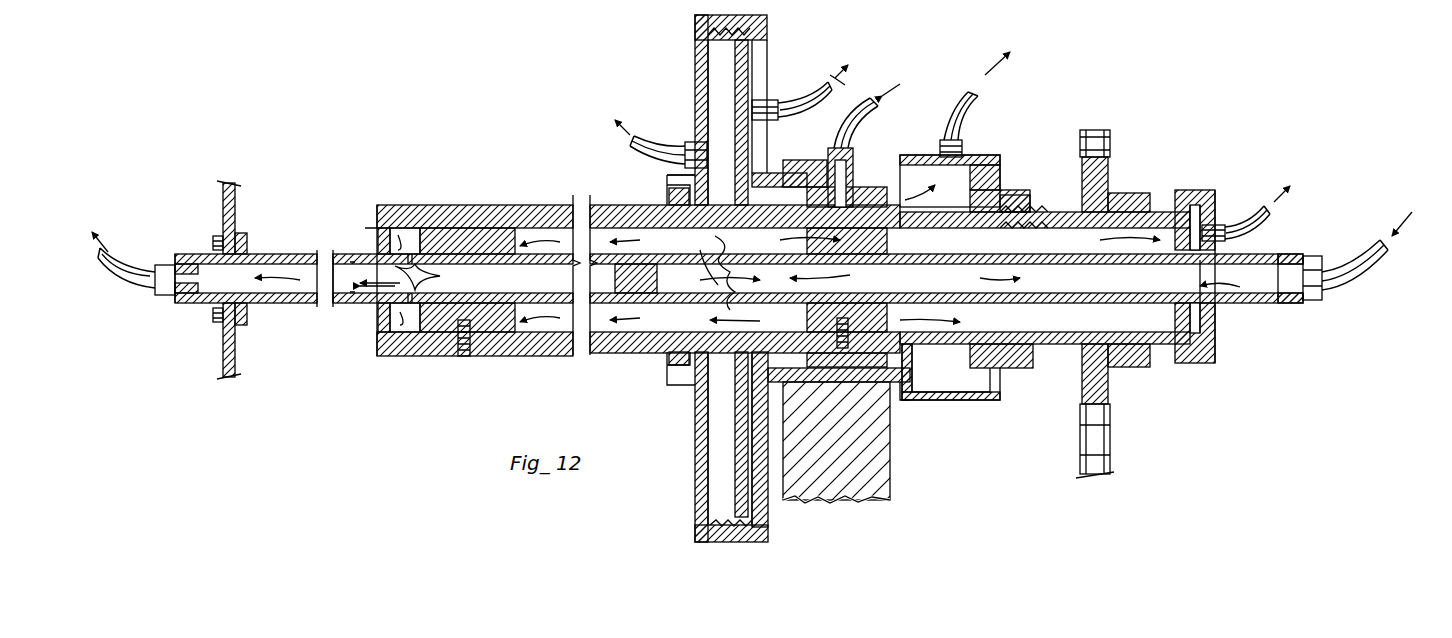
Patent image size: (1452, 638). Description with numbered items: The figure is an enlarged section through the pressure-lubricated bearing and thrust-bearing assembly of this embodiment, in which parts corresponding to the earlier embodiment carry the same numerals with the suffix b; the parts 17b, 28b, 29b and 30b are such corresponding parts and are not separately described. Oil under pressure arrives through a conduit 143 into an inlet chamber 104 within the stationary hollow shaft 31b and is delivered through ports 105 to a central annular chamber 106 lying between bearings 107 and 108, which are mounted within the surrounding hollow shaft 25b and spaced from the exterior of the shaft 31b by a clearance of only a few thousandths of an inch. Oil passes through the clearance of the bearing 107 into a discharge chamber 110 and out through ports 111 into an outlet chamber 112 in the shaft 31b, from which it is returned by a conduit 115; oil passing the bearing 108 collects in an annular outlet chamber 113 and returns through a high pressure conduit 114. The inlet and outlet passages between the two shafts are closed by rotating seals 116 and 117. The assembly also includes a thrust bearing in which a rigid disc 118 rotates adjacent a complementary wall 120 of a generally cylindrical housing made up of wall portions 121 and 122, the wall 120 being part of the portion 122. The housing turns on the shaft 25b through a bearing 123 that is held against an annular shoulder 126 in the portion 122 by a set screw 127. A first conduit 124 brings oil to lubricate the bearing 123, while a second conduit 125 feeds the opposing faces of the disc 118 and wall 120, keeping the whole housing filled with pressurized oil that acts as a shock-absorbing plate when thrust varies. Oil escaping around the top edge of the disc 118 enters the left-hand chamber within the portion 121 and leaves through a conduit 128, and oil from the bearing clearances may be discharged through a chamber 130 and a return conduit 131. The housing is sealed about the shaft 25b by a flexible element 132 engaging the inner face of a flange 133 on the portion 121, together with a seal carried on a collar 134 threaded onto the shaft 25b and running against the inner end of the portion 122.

The conduit 115 is at (118, 245).
The flange plate 30b is at (235, 200).
The flange plate 29b is at (223, 347).
The hollow shaft 31b is at (278, 305).
The outlet chamber 112 is at (345, 255).
The rotating seal 117 is at (368, 230).
The discharge chamber 110 is at (398, 230).
The hollow shaft 25b is at (455, 208).
The bearing 107 is at (478, 235).
The ports 111 is at (415, 278).
The central annular chamber 106 is at (605, 225).
The flexible element 132 is at (660, 200).
The conduit 128 is at (650, 135).
The wall portion 121 is at (695, 64).
The complementary wall 120 is at (762, 50).
The rigid disc 118 is at (752, 68).
The second conduit 125 is at (822, 92).
The first conduit 124 is at (870, 118).
The housing portion 122 is at (770, 185).
The bearing 123 is at (920, 140).
The set screw 127 is at (848, 150).
The chamber 130 is at (920, 175).
The return conduit 131 is at (972, 108).
The flange 133 is at (1005, 180).
The collar 134 is at (1015, 200).
The annular outlet chamber 113 is at (1052, 235).
The rotating seal 116 is at (1176, 200).
The high pressure conduit 114 is at (1248, 215).
The conduit 143 is at (1362, 258).
The annular shoulder 126 is at (740, 243).
The ports 105 is at (735, 315).
The bearing 108 is at (935, 353).
The inlet chamber 104 is at (1068, 295).
The drum 28b is at (890, 430).
The flange 17b is at (1108, 432).